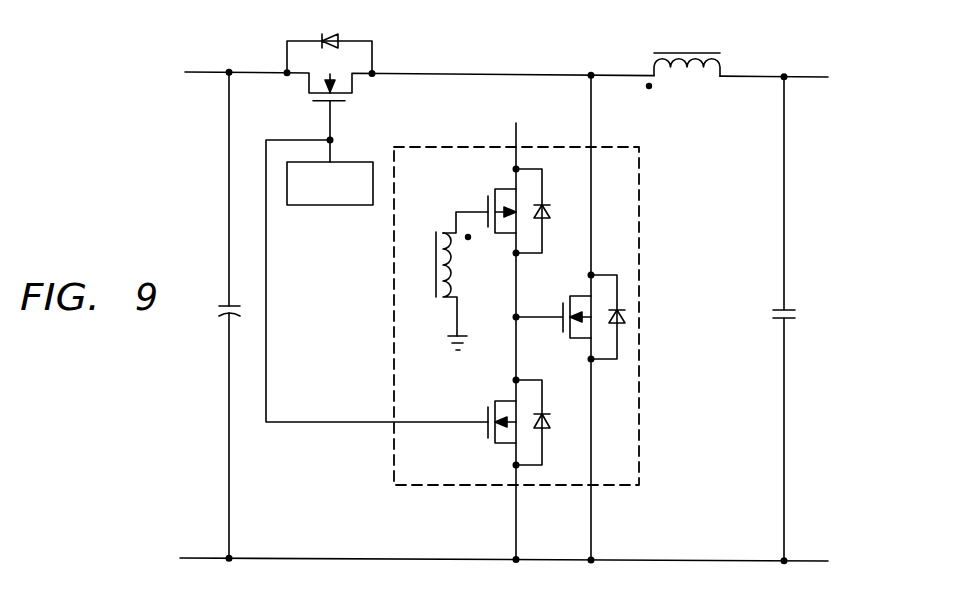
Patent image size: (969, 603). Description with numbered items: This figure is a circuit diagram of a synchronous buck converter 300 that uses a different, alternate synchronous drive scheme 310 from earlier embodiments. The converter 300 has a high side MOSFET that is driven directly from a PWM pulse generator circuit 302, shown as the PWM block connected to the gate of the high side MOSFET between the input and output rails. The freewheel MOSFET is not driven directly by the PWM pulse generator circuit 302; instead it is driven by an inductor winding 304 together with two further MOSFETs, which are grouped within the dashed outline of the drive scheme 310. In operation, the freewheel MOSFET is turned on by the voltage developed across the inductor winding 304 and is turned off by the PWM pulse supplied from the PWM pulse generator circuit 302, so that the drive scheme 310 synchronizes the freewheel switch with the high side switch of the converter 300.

The synchronous buck converter 300 is at (131, 175).
The PWM pulse generator circuit 302 is at (330, 206).
The inductor winding 304 is at (720, 67).
The drive scheme 310 is at (639, 270).